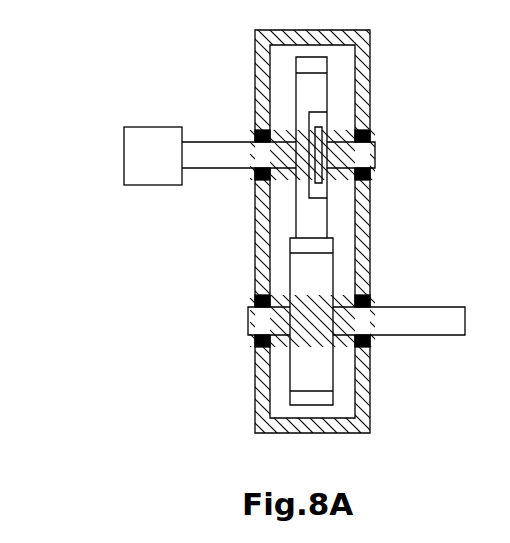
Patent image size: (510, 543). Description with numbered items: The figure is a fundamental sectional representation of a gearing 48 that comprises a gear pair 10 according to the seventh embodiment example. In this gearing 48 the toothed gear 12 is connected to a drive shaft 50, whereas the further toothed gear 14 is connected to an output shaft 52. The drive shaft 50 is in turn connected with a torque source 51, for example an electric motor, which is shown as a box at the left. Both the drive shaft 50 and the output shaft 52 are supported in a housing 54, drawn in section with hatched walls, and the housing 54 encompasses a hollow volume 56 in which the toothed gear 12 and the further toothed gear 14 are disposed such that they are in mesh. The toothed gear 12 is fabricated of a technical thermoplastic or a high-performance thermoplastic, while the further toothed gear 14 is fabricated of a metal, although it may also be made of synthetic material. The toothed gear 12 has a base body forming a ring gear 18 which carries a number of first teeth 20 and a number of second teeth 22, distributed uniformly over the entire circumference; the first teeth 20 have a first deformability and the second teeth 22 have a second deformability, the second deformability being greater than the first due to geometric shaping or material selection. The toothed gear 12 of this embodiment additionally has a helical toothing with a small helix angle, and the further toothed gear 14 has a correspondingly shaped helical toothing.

The gear pair 10 is at (118, 93).
The gearing 48 is at (255, 231).
The toothed gear 12 is at (328, 92).
The ring gear 18 is at (403, 175).
The first teeth 20 is at (322, 212).
The second teeth 22 is at (323, 133).
The further toothed gear 14 is at (318, 362).
The drive shaft 50 is at (203, 153).
The torque source 51 is at (169, 172).
The output shaft 52 is at (443, 336).
The housing 54 is at (263, 392).
The hollow volume 56 is at (277, 265).